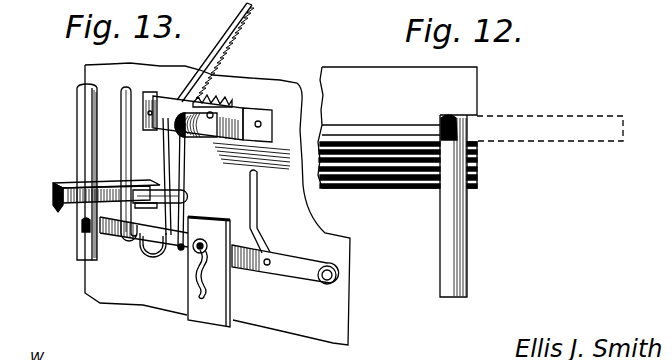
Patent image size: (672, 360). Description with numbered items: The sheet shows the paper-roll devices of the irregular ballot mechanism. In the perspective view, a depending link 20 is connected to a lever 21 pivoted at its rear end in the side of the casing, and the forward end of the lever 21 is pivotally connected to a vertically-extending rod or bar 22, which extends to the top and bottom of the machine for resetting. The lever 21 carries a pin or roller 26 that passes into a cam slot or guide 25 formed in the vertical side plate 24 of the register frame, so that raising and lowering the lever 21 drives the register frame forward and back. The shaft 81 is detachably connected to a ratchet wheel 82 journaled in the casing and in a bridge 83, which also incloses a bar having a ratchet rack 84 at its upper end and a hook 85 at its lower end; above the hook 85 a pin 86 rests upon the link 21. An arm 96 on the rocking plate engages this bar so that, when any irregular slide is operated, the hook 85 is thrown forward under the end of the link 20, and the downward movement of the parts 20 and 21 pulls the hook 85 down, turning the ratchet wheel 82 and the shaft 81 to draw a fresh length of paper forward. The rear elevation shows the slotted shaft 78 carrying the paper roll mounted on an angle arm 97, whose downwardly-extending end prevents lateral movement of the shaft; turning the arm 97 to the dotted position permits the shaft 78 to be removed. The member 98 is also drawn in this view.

In FIG. 13, the vertically-extending rods or bars 22 is at (83, 113).
In FIG. 13, the depending links 20 is at (128, 152).
In FIG. 13, the cross bar 98 is at (63, 210).
In FIG. 13, the arm 96 is at (188, 196).
In FIG. 13, the pin 86 is at (146, 214).
In FIG. 13, the levers 21 is at (132, 240).
In FIG. 13, the hook 85 is at (157, 258).
In FIG. 13, the bridge 83 is at (228, 122).
In FIG. 13, the shaft 81 is at (200, 133).
In FIG. 13, the ratchet wheel 82 is at (222, 100).
In FIG. 13, the ratchet rack 84 is at (251, 10).
In FIG. 13, the vertical sides or plates 24 is at (209, 272).
In FIG. 13, the cam slots or guides 25 is at (216, 282).
In FIG. 13, the pin or roller 26 is at (208, 247).
In FIG. 12, the shaft 78 is at (466, 92).
In FIG. 12, the angle arms 97 is at (452, 252).